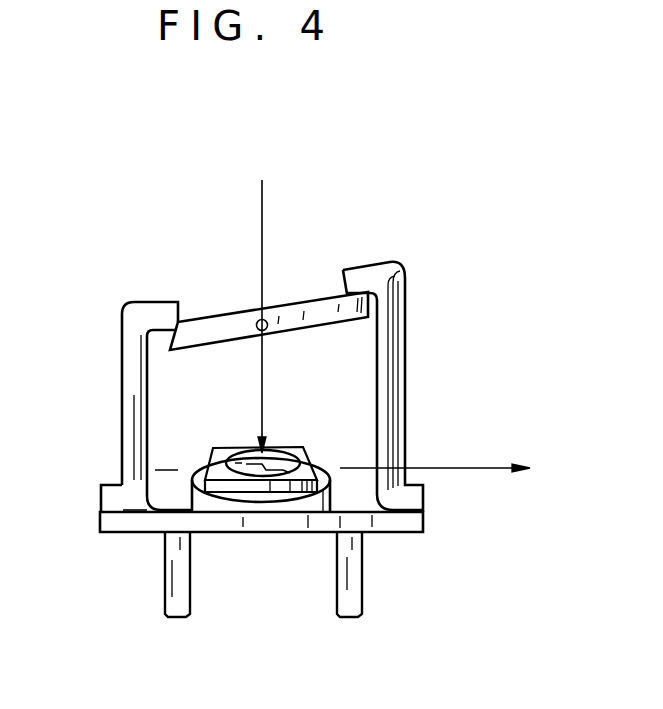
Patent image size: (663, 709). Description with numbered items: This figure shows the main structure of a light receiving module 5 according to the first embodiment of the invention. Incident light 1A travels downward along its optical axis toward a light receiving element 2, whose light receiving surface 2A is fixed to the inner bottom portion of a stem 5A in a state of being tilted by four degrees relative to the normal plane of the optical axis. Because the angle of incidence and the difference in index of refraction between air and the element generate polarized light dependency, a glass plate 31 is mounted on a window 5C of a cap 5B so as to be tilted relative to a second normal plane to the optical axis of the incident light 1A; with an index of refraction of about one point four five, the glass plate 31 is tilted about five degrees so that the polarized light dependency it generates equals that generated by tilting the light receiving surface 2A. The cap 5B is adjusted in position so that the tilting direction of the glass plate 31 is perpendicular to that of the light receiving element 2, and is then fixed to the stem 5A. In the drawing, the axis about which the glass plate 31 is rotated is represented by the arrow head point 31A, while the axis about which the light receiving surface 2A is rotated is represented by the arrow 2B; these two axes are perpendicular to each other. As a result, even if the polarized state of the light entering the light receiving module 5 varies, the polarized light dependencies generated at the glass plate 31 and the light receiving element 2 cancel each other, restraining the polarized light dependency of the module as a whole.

The light receiving module 5 is at (272, 160).
The stem 5A is at (134, 526).
The cap 5B is at (120, 367).
The window 5C is at (300, 287).
The incident light 1A is at (262, 200).
The glass plate 31 is at (233, 320).
The axis of rotation of glass plate 31A is at (253, 330).
The light receiving element 2 is at (313, 462).
The light receiving surface 2A is at (212, 447).
The axis of rotation of light receiving surface 2B is at (476, 471).